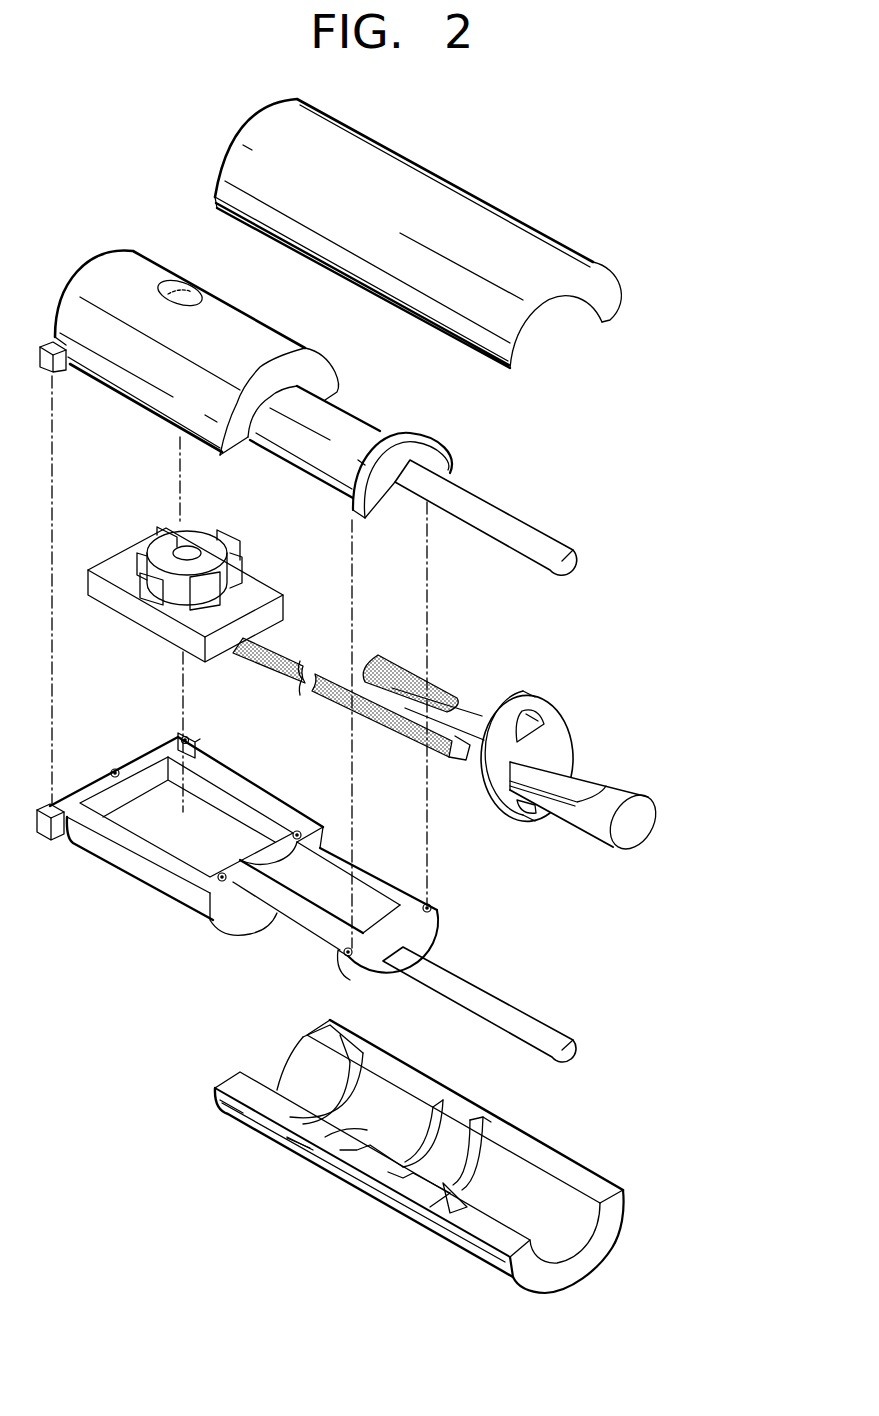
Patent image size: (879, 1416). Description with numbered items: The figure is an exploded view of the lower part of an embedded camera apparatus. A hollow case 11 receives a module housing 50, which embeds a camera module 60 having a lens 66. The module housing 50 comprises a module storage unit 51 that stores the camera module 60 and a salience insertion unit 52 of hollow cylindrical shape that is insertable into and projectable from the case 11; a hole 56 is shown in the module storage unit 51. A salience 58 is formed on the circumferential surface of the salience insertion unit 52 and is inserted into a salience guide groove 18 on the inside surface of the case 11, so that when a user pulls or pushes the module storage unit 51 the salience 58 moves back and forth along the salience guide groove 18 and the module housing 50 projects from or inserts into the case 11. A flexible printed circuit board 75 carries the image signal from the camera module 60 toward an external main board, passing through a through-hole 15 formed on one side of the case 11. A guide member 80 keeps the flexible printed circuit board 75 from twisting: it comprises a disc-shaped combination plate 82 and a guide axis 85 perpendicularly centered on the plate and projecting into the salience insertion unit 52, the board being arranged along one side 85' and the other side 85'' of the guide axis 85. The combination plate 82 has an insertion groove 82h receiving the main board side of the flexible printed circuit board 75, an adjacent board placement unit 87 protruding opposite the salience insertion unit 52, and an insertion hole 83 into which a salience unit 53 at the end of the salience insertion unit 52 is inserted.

The case 11 is at (516, 230).
The through-hole 15 is at (432, 1233).
The salience guide groove 18 is at (330, 1135).
The module housing 50 is at (85, 250).
The module storage unit 51 is at (245, 328).
The salience insertion unit 52 is at (365, 418).
The salience unit 53 is at (492, 518).
The hole 56 is at (182, 290).
The salience 58 is at (422, 432).
The camera module 60 is at (262, 596).
The lens 66 is at (192, 550).
The flexible printed circuit board 75 is at (327, 672).
The guide member 80 is at (655, 745).
The combination plate 82 is at (533, 700).
The insertion groove 82h is at (572, 720).
The insertion hole 83 is at (534, 814).
The guide axis 85 is at (423, 766).
The one side of the guide axis 85' is at (448, 774).
The other side of the guide axis 85'' is at (408, 719).
The board placement unit 87 is at (582, 765).